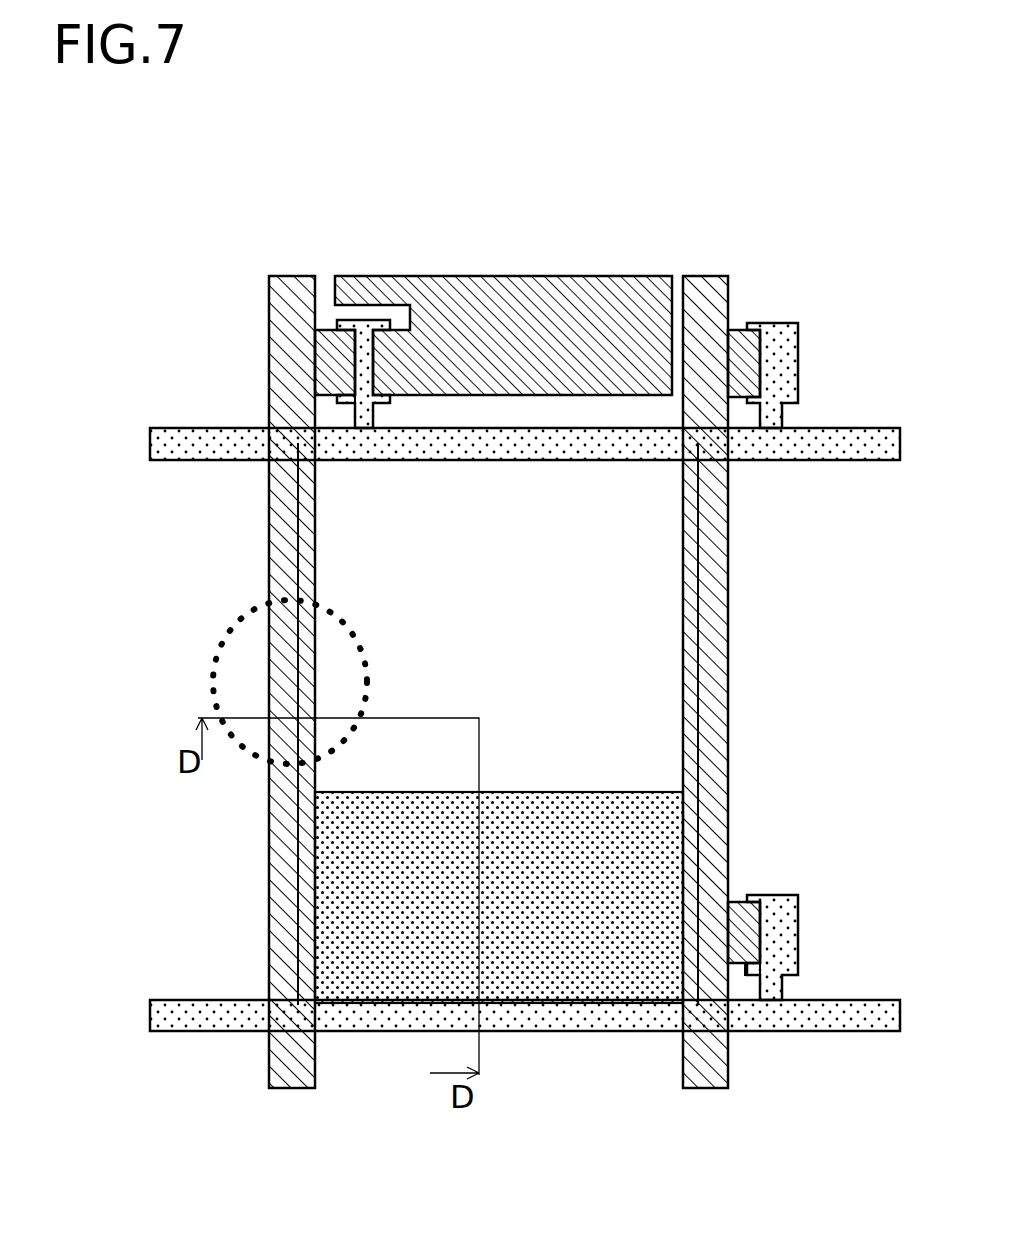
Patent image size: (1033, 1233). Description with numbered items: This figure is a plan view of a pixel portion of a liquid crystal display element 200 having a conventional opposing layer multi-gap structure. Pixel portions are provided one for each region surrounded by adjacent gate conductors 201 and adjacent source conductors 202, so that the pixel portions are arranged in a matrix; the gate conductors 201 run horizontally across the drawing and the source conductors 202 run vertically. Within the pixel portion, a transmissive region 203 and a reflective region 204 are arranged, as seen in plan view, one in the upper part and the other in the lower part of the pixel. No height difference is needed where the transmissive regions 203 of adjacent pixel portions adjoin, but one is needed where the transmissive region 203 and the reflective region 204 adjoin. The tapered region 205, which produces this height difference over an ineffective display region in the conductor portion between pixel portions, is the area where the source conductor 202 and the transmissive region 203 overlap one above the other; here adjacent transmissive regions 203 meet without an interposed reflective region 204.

The liquid crystal display element 200 is at (787, 239).
The gate conductor 201 is at (845, 432).
The source conductor 202 is at (270, 500).
The transmissive region 203 is at (558, 637).
The reflective region 204 is at (650, 833).
The tapered region 205 is at (218, 657).